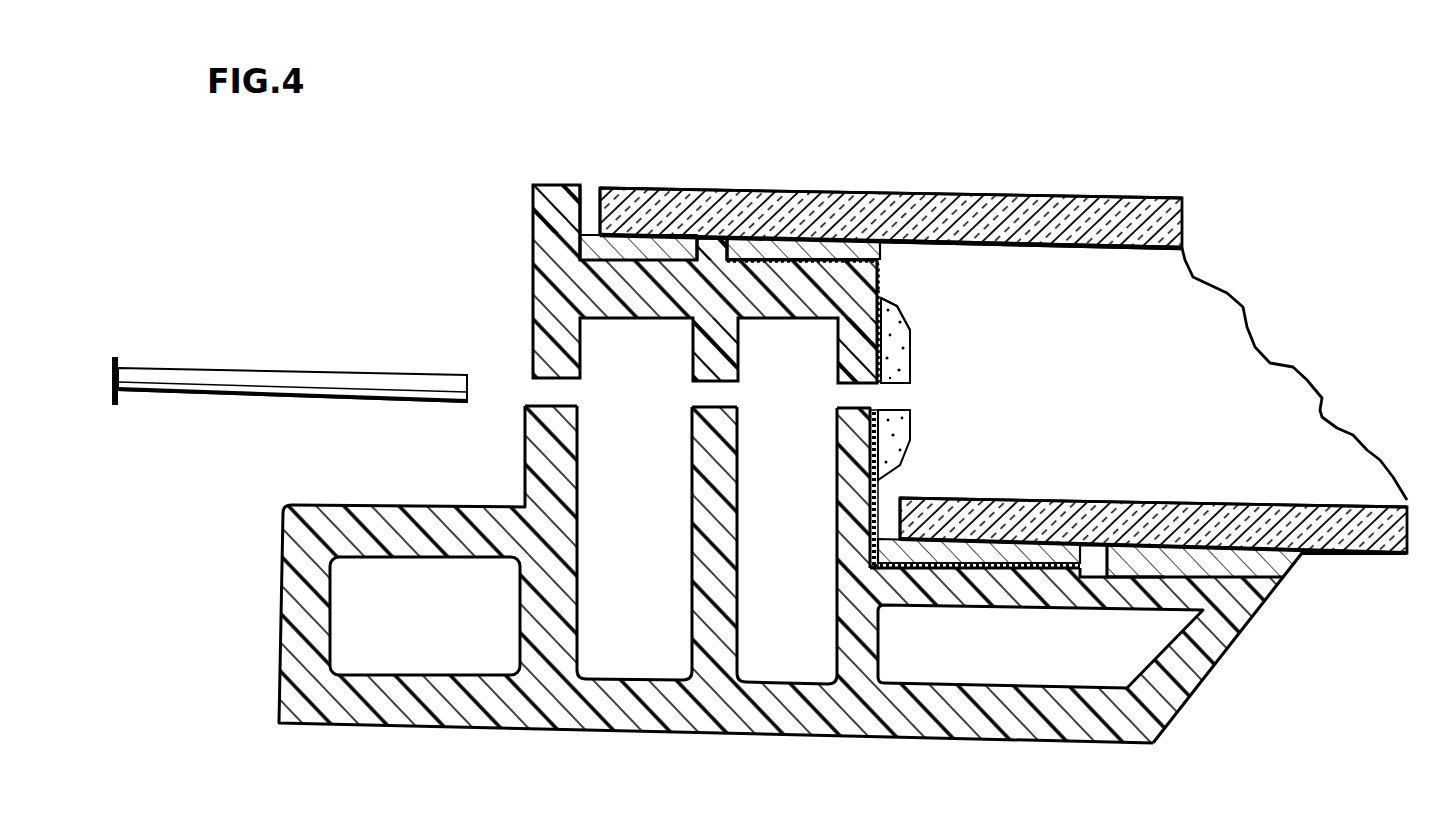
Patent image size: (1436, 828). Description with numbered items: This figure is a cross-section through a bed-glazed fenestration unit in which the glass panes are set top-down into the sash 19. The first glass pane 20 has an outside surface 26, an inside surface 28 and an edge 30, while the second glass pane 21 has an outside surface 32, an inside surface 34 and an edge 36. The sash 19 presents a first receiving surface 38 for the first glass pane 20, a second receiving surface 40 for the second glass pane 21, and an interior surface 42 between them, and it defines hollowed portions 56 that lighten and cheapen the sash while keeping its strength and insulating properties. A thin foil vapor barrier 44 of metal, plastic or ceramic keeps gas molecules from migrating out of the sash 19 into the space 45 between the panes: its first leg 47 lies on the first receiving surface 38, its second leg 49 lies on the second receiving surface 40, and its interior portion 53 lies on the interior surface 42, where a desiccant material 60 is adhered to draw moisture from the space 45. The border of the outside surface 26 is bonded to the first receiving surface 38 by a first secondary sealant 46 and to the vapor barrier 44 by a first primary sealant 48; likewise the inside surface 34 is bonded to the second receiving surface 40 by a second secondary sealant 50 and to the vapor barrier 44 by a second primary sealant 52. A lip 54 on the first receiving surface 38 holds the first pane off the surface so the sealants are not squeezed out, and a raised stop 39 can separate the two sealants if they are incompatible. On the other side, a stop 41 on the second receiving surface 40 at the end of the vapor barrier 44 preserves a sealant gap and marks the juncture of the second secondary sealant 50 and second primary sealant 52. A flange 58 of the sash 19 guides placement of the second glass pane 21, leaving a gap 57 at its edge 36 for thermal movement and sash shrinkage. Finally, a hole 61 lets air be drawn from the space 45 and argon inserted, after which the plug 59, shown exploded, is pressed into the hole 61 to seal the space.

The sash 19 is at (533, 354).
The first glass pane 20 is at (1070, 512).
The second glass pane 21 is at (973, 197).
The outside surface 26 is at (1368, 554).
The inside surface 28 is at (1318, 506).
The edge 30 is at (897, 500).
The outside surface 32 is at (1087, 197).
The inside surface 34 is at (1052, 248).
The edge 36 is at (597, 196).
The first receiving surface 38 is at (1093, 547).
The stop 39 is at (1107, 547).
The second receiving surface 40 is at (727, 240).
The stop 41 is at (710, 247).
The interior surface 42 is at (873, 460).
The vapor barrier 44 is at (882, 277).
The space 45 is at (1228, 346).
The first secondary sealant 46 is at (1172, 557).
The first leg 47 is at (967, 571).
The first primary sealant 48 is at (997, 553).
The second leg 49 is at (768, 259).
The second secondary sealant 50 is at (662, 242).
The second primary sealant 52 is at (855, 243).
The interior portion 53 is at (892, 304).
The lip 54 is at (1273, 588).
The hollowed portions 56 is at (410, 618).
The gap 57 is at (590, 216).
The flange 58 is at (552, 185).
The plug 59 is at (252, 378).
The desiccant material 60 is at (906, 350).
The hole 61 is at (537, 392).